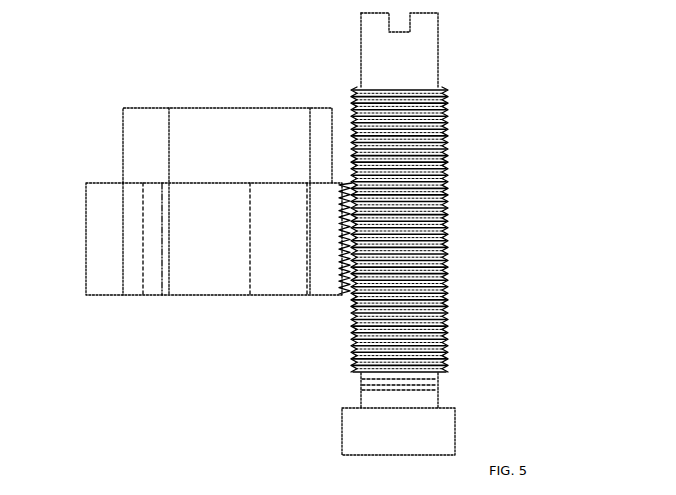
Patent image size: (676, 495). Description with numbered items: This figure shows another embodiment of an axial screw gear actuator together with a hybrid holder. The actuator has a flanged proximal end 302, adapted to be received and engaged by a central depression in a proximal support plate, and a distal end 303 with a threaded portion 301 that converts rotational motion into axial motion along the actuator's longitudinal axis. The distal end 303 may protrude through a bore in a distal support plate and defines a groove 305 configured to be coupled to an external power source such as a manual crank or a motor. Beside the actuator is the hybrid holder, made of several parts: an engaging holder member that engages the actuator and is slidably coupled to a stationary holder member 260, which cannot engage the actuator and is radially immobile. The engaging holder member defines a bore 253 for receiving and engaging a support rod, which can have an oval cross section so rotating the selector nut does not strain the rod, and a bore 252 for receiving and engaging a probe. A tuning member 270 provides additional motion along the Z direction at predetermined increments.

The stationary holder member 260 is at (275, 127).
The tuning member 270 is at (137, 203).
The bore 253 is at (170, 288).
The bore 252 is at (343, 295).
The groove 305 is at (440, 13).
The distal end 303 is at (440, 48).
The threaded portion 301 is at (455, 163).
The flanged proximal end 302 is at (440, 439).